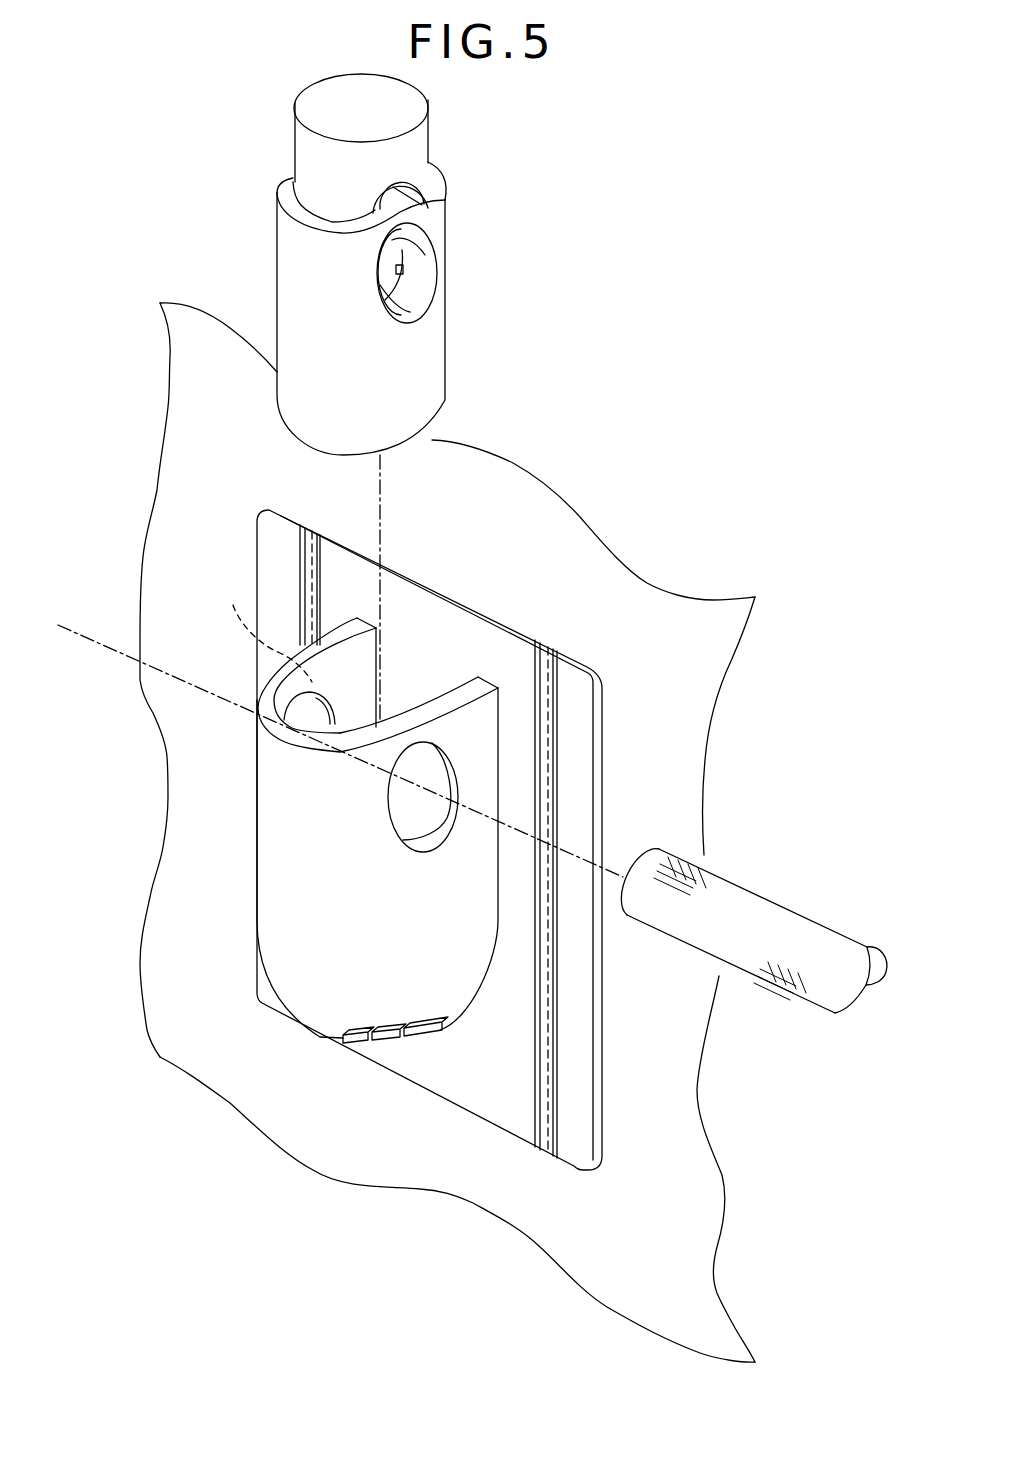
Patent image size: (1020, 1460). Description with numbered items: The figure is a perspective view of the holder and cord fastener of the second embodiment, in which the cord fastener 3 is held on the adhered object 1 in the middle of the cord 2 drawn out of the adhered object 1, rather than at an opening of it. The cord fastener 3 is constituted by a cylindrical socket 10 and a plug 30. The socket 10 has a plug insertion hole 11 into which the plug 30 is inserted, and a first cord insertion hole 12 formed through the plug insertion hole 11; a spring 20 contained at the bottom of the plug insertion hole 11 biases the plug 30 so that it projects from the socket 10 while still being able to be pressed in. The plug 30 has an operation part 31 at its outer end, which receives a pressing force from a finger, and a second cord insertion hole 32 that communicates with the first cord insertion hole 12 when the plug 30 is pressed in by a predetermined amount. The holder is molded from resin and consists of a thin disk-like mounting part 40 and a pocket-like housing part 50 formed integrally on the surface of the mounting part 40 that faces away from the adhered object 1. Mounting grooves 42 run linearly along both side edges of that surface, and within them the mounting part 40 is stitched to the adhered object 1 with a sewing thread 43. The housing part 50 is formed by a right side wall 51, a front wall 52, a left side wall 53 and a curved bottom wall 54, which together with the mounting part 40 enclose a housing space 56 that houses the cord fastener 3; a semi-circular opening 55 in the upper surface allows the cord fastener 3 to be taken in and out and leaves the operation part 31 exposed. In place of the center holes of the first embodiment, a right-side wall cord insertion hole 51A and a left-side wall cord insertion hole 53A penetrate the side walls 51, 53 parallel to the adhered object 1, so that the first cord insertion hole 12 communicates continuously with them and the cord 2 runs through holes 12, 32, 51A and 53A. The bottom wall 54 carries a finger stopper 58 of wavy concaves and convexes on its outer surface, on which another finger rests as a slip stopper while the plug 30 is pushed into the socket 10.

The adhered object 1 is at (677, 600).
The cord 2 is at (830, 980).
The cord fastener 3 is at (444, 257).
The socket 10 is at (420, 392).
The plug insertion hole 11 is at (420, 280).
The first cord insertion hole 12 is at (432, 290).
The spring 20 is at (461, 294).
The plug 30 is at (419, 120).
The operation part 31 is at (388, 83).
The second cord insertion hole 32 is at (443, 206).
The mounting part 40 is at (459, 840).
The mounting groove 42 is at (550, 1022).
The sewing thread 43 is at (550, 1065).
The housing part 50 is at (326, 668).
The right side wall 51 is at (265, 627).
The right-side wall cord insertion hole 51A is at (313, 718).
The front wall 52 is at (394, 835).
The left side wall 53 is at (540, 748).
The left-side wall cord insertion hole 53A is at (450, 783).
The bottom wall 54 is at (447, 1027).
The opening 55 is at (437, 697).
The housing space 56 is at (348, 660).
The finger stopper 58 is at (387, 1043).